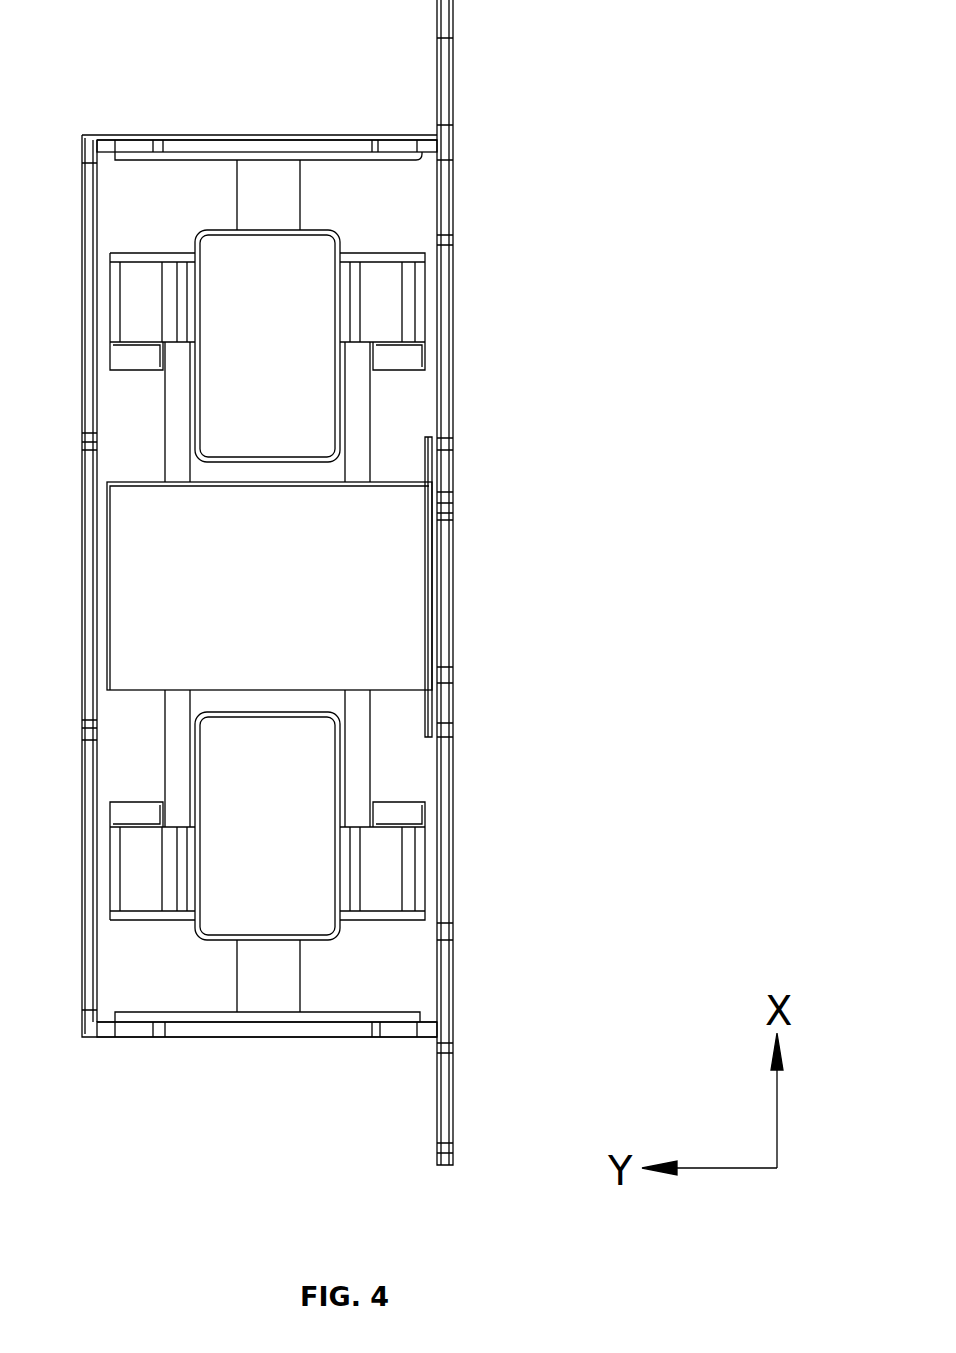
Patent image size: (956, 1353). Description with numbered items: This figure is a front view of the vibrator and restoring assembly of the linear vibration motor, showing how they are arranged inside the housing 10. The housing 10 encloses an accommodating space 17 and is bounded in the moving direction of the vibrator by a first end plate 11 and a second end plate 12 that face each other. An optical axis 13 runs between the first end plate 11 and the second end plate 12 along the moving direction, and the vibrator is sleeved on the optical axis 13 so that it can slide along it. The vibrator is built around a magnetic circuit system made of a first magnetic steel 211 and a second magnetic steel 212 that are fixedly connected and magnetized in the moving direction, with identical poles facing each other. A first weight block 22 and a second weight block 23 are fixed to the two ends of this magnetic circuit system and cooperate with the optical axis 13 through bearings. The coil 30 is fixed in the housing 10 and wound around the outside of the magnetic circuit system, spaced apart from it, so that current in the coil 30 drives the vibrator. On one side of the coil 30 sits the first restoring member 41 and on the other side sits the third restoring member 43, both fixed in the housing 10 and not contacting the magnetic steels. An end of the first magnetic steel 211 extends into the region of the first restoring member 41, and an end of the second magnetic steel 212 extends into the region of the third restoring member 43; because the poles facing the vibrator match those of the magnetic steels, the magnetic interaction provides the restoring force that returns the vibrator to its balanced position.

The housing 10 is at (447, 67).
The first end plate 11 is at (353, 1028).
The second end plate 12 is at (323, 145).
The optical axis 13 is at (247, 197).
The accommodating space 17 is at (140, 220).
The first weight block 22 is at (385, 877).
The second weight block 23 is at (382, 297).
The coil 30 is at (407, 602).
The first restoring member 41 is at (285, 835).
The third restoring member 43 is at (307, 258).
The first magnetic steel 211 is at (358, 745).
The second magnetic steel 212 is at (358, 433).